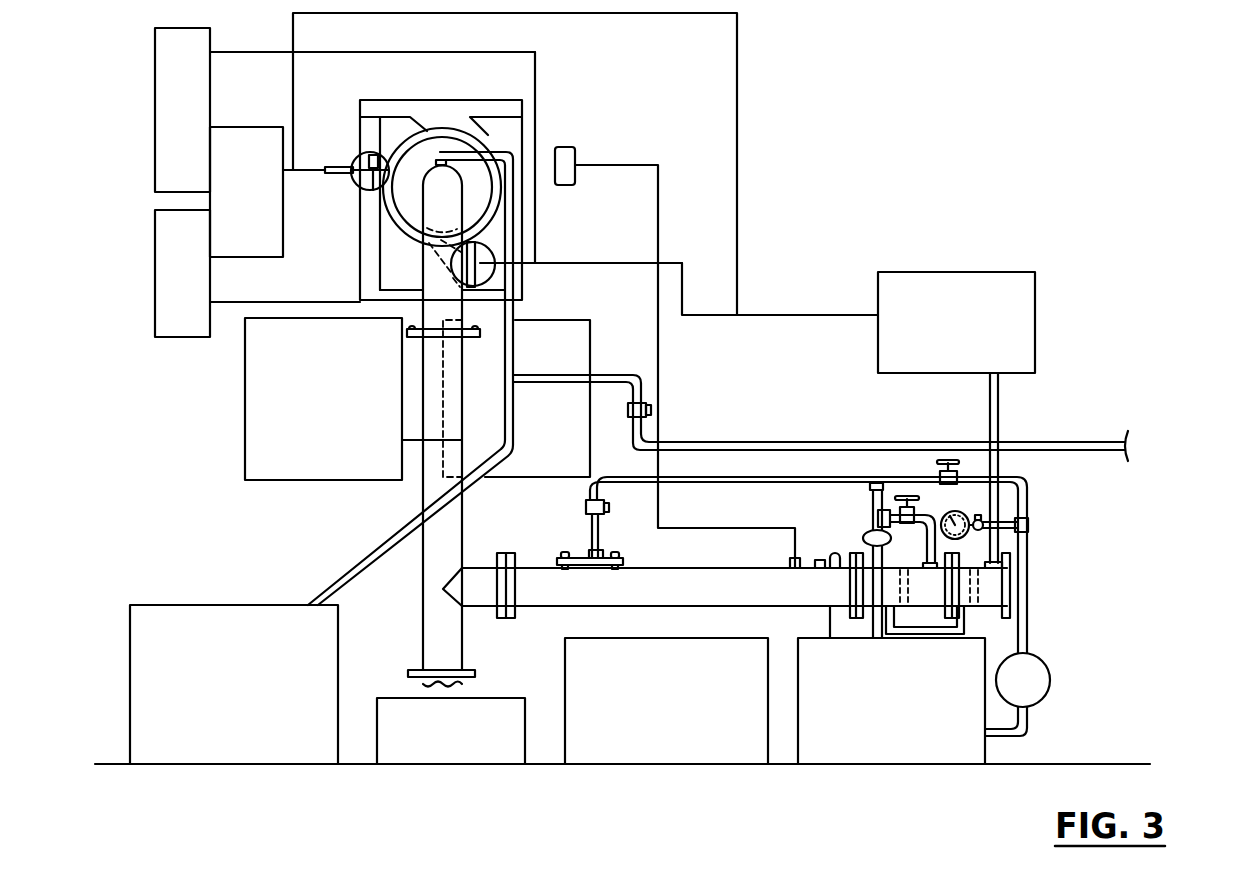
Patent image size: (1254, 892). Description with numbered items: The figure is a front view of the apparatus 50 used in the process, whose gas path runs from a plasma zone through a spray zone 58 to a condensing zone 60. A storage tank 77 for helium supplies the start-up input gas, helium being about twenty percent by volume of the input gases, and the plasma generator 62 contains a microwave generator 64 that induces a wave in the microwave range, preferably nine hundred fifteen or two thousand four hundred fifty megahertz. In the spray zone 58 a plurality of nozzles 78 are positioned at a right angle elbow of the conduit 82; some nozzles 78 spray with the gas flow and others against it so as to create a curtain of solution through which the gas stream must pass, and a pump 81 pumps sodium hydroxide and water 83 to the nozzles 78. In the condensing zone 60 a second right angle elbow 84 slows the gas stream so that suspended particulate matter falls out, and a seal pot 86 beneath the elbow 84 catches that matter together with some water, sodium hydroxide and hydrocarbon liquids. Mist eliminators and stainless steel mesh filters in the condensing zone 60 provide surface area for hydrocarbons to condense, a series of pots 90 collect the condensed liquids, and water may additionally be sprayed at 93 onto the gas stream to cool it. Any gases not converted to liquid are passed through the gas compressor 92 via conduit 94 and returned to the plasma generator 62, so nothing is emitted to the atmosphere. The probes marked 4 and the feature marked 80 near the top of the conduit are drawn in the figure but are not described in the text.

The apparatus 50 is at (917, 120).
The storage tank for helium 77 is at (165, 147).
The probe 4 is at (357, 157).
The conduit 82 is at (435, 160).
The nozzles 78 is at (447, 160).
The spray zone 58 is at (457, 178).
The cavity 80 is at (422, 190).
The microwave generator 64 is at (254, 389).
The plasma generator 62 is at (628, 357).
The sodium hydroxide and water 83 is at (808, 442).
The gas compressor 92 is at (1030, 365).
The conduit 94 is at (999, 411).
The water spray 93 is at (582, 553).
The condensing zone 60 is at (683, 578).
The pump 81 is at (233, 612).
The second right angle elbow 84 is at (443, 590).
The seal pot 86 is at (503, 752).
The pots 90 is at (704, 752).